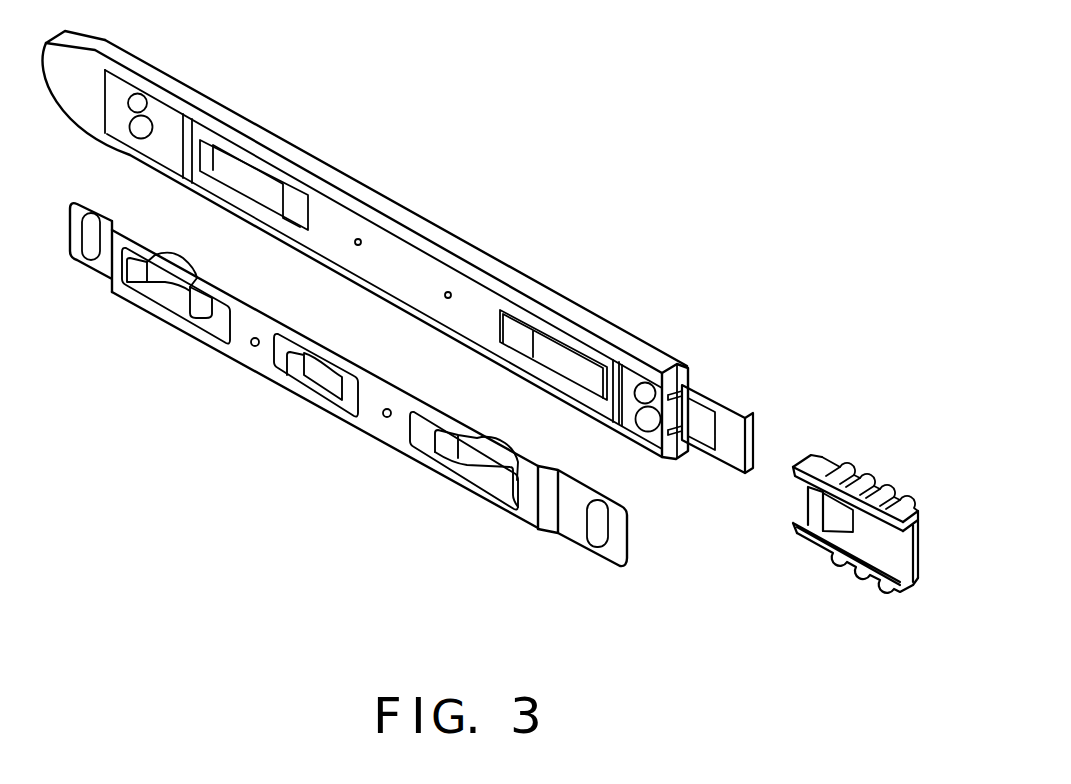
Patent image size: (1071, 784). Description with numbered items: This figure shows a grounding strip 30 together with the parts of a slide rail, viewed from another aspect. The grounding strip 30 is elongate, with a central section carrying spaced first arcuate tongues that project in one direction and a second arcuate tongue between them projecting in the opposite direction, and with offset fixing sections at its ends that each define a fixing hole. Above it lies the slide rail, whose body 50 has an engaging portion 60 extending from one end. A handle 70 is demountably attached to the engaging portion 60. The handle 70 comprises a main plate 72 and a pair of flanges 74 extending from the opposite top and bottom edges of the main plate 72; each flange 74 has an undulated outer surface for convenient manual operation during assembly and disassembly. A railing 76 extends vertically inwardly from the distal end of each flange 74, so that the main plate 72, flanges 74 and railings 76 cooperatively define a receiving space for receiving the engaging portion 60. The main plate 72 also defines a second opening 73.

The grounding strip 30 is at (323, 443).
The body 50 is at (437, 236).
The engaging portion 60 is at (715, 402).
The handle 70 is at (835, 484).
The main plate 72 is at (873, 535).
The second opening 73 is at (833, 505).
The flanges 74 is at (817, 468).
The railing 76 is at (797, 467).